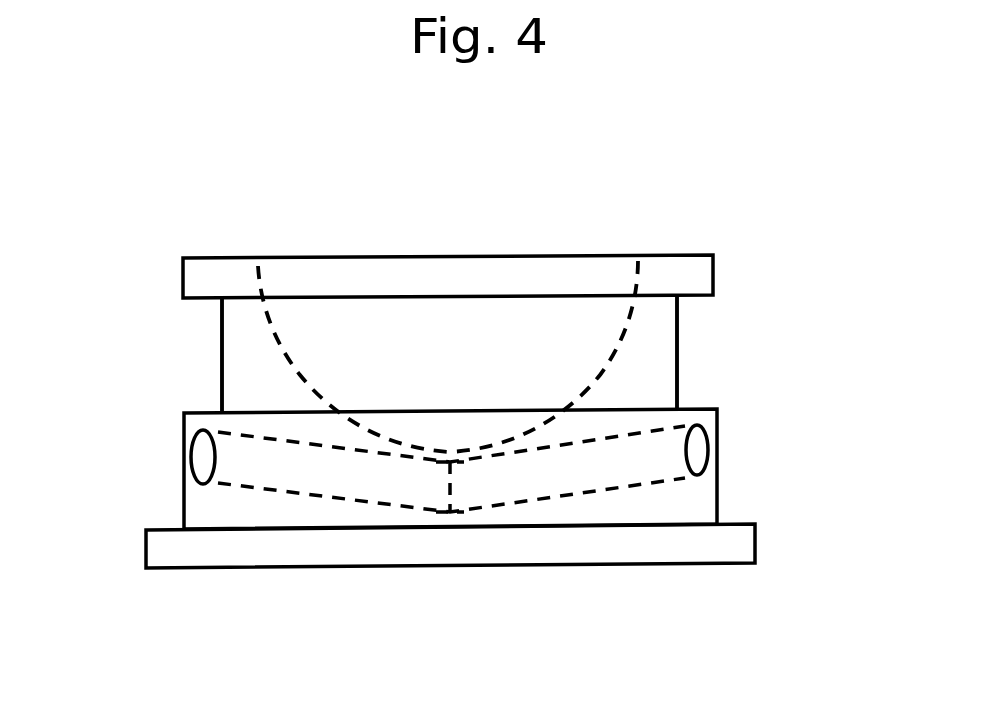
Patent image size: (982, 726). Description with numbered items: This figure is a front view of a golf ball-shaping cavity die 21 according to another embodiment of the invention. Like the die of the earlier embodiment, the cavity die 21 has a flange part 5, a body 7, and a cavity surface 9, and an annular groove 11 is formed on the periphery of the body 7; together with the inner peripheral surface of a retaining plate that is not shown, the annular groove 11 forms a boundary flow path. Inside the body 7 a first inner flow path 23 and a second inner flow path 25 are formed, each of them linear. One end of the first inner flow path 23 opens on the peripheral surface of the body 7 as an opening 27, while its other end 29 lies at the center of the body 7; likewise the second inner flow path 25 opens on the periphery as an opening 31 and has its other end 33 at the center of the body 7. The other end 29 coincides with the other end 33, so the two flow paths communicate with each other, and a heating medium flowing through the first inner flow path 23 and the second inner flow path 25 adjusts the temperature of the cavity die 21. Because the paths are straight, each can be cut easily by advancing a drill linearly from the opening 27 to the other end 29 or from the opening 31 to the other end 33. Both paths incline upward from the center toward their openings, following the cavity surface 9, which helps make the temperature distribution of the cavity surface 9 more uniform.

The flange part 5 is at (730, 548).
The body 7 is at (653, 373).
The cavity surface 9 is at (285, 352).
The annular groove 11 is at (677, 330).
The golf ball-shaping cavity die 21 is at (545, 247).
The first inner flow path 23 is at (583, 470).
The second inner flow path 25 is at (293, 478).
The opening 27 is at (700, 447).
The other end 29 is at (426, 571).
The opening 31 is at (200, 452).
The other end 33 is at (447, 500).